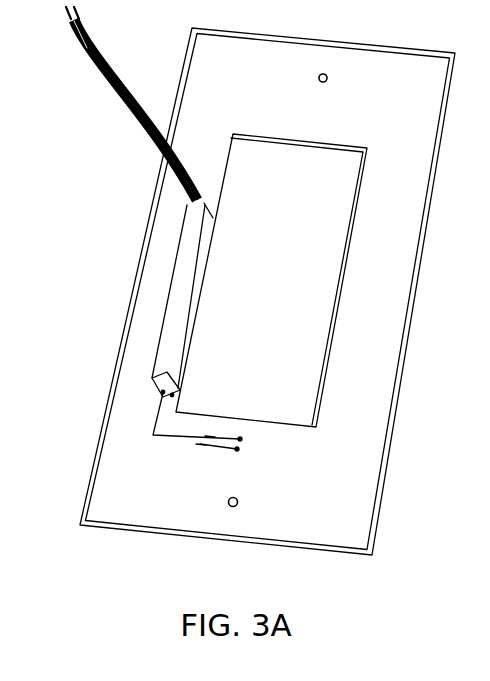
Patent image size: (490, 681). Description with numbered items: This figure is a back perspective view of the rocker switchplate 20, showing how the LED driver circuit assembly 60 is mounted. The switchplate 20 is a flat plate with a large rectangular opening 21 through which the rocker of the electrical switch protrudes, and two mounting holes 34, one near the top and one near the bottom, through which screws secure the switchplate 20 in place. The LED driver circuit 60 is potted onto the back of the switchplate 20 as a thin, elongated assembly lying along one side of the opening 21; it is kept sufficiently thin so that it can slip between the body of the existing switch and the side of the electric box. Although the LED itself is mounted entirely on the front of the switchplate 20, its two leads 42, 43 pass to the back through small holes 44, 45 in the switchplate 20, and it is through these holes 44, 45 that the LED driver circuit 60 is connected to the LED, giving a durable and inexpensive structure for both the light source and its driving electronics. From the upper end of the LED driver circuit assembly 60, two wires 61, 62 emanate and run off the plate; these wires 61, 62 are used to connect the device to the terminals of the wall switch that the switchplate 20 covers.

The switchplate 20 is at (368, 480).
The opening 21 is at (330, 250).
The mounting holes 34 is at (328, 80).
The lead 42 is at (212, 436).
The lead 43 is at (200, 444).
The hole 44 is at (253, 439).
The hole 45 is at (252, 449).
The LED driver circuit assembly 60 is at (167, 340).
The wire 61 is at (70, 32).
The wire 62 is at (84, 30).